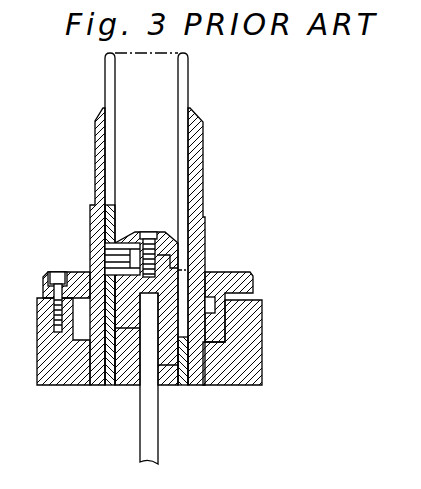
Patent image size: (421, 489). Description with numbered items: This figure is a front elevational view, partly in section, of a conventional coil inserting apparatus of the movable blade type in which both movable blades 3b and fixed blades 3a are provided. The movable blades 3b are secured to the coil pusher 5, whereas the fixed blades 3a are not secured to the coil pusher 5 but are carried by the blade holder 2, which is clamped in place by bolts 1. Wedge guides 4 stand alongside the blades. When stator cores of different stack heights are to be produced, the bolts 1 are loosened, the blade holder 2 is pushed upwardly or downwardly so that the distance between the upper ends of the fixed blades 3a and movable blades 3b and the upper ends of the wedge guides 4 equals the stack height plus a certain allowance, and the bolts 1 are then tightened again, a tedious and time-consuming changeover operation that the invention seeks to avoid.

The bolt 1 is at (58, 272).
The blade holder 2 is at (225, 296).
The fixed blade 3a is at (188, 86).
The movable blade 3b is at (105, 89).
The wedge guide 4 is at (203, 152).
The coil pusher 5 is at (205, 218).